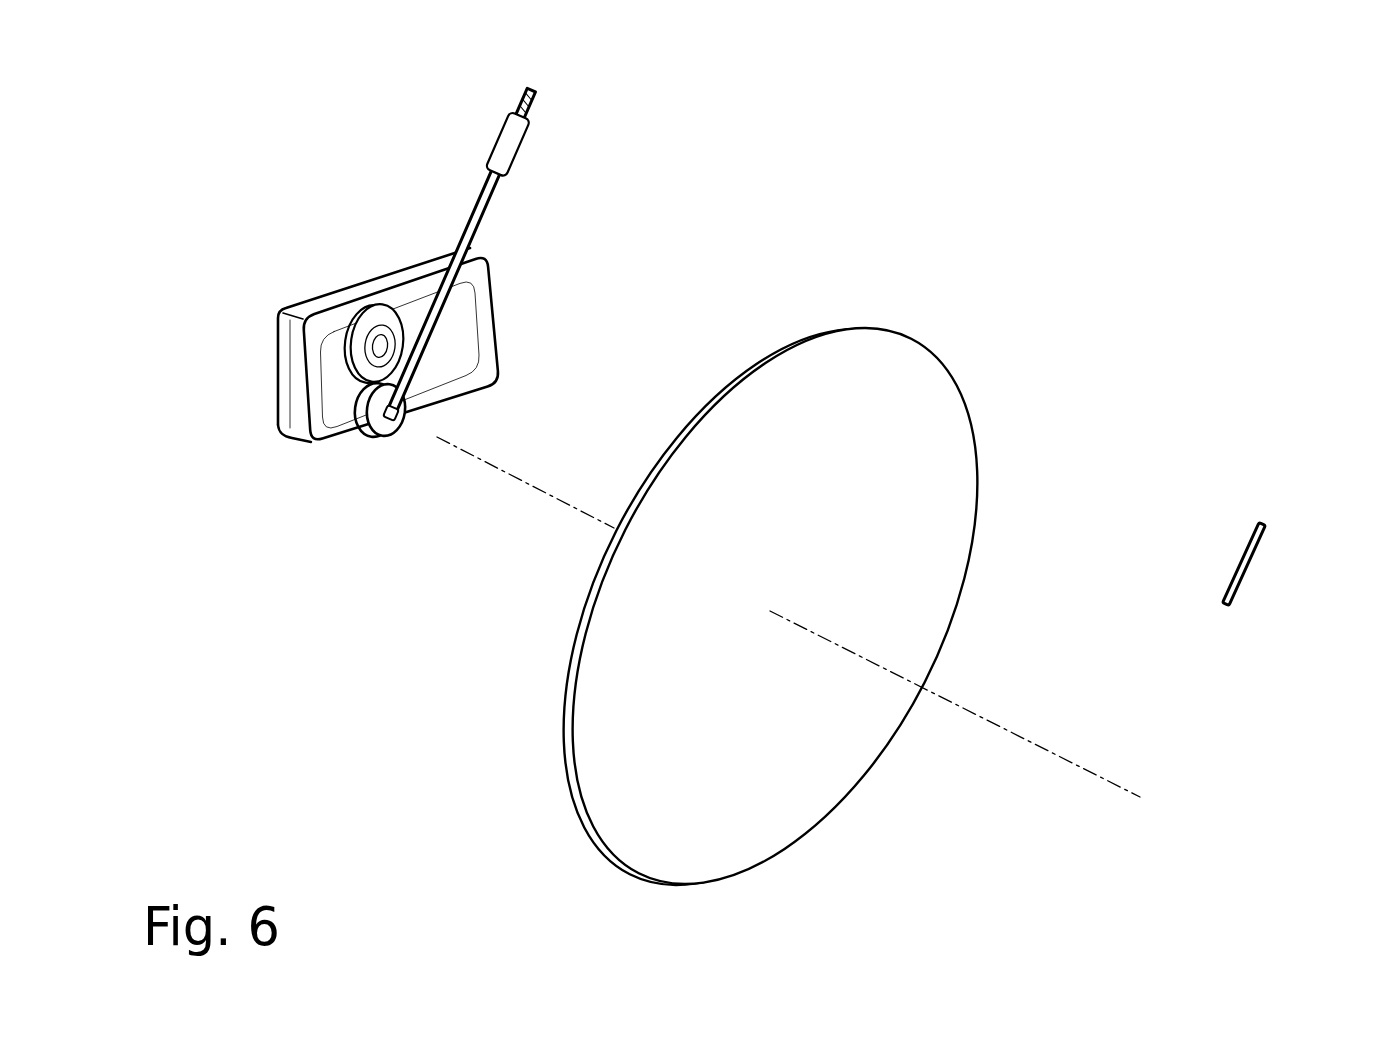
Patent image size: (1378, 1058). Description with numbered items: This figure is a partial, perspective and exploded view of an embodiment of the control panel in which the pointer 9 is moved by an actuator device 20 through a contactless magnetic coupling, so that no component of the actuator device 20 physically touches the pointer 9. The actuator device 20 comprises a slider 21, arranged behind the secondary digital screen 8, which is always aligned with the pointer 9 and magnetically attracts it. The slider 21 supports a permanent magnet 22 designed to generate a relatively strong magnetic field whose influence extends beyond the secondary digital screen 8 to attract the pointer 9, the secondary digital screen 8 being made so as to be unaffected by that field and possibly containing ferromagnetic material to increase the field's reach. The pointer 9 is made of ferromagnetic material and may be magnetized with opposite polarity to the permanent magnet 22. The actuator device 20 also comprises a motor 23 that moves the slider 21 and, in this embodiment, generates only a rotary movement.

The actuator device 20 is at (322, 142).
The slider 21 is at (479, 191).
The permanent magnet 22 is at (504, 158).
The motor 23 is at (340, 384).
The secondary digital screen 8 is at (610, 719).
The pointer 9 is at (1250, 572).